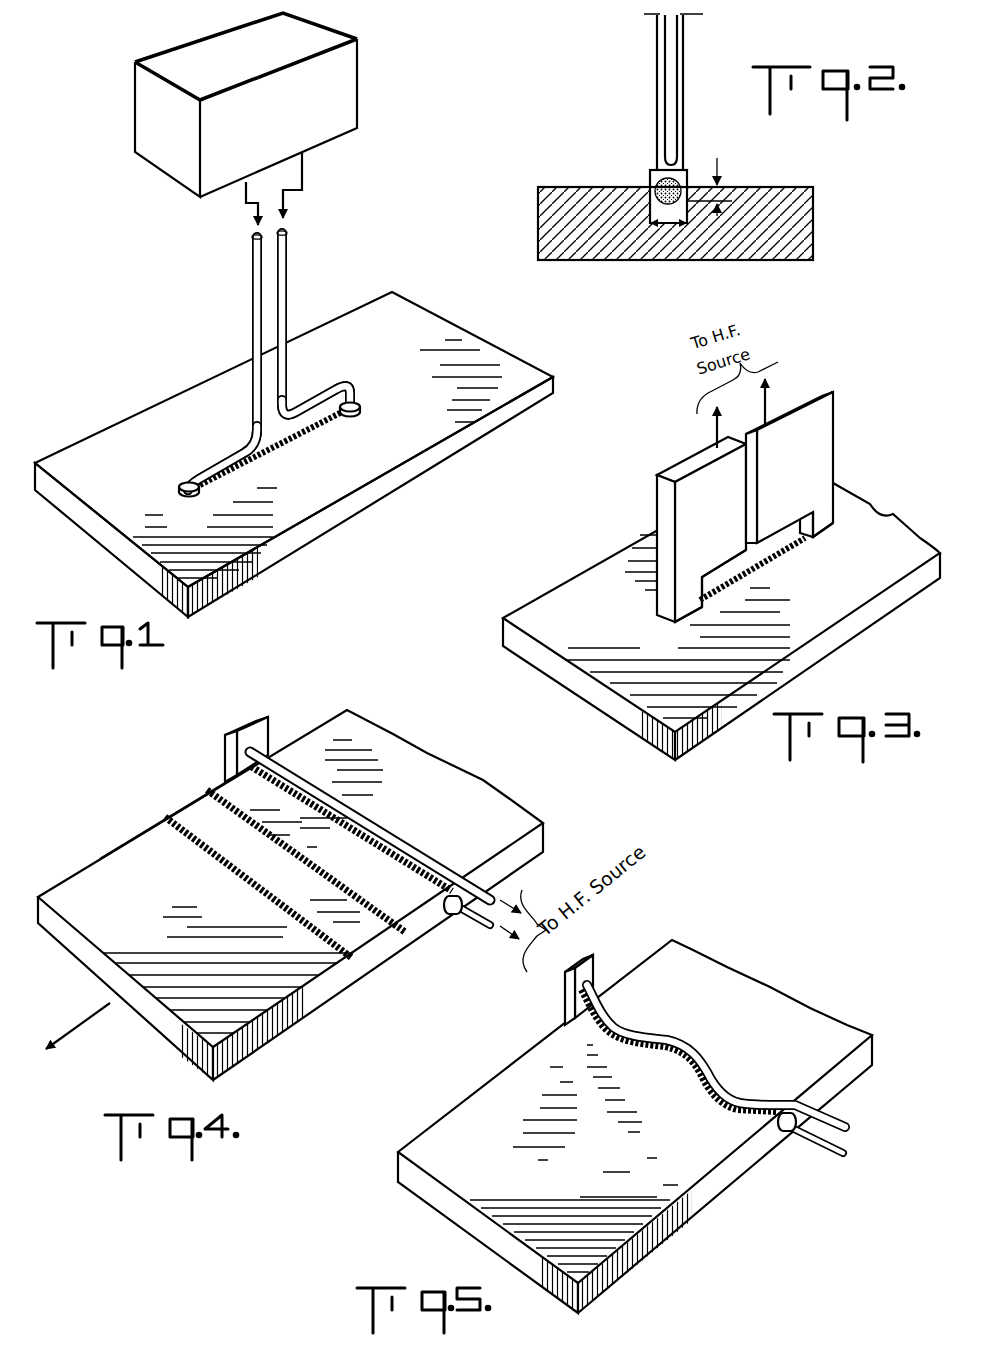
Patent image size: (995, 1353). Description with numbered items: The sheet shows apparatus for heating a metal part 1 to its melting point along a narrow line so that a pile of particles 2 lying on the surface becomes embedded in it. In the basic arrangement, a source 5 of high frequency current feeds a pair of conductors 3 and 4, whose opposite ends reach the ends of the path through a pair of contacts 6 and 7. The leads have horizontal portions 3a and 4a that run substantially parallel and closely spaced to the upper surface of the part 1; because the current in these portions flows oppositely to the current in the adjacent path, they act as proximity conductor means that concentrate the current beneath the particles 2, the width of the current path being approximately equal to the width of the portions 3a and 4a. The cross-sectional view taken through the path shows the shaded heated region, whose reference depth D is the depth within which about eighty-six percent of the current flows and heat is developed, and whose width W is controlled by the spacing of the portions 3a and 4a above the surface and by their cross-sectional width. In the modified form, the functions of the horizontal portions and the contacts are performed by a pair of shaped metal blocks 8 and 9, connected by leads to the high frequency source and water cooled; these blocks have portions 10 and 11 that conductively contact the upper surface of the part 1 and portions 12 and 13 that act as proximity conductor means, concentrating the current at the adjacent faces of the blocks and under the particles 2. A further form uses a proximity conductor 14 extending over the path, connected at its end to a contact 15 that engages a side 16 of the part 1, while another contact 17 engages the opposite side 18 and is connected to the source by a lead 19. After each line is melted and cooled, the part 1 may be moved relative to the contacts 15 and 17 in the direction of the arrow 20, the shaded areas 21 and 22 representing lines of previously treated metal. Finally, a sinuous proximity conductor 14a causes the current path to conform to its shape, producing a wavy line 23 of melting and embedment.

In FIG. 1, the metal part 1 is at (392, 291).
In FIG. 2, the metal part 1 is at (538, 196).
In FIG. 3, the metal part 1 is at (882, 518).
In FIG. 1, the particles 2 is at (295, 437).
In FIG. 2, the particles 2 is at (654, 178).
In FIG. 3, the particles 2 is at (758, 565).
In FIG. 4, the particles 2 is at (378, 848).
In FIG. 1, the conductor 3 is at (251, 266).
In FIG. 3, the conductor 3 is at (712, 424).
In FIG. 1, the horizontal portion of conductor 3 3a is at (217, 451).
In FIG. 1, the conductor 4 is at (290, 266).
In FIG. 2, the conductor 4 is at (684, 62).
In FIG. 3, the conductor 4 is at (771, 393).
In FIG. 1, the horizontal portion of conductor 4 4a is at (342, 387).
In FIG. 1, the source of high frequency current 5 is at (182, 175).
In FIG. 1, the contact 6 is at (361, 410).
In FIG. 2, the contact 6 is at (683, 172).
In FIG. 1, the contact 7 is at (193, 497).
In FIG. 3, the shaped metal block 8 is at (836, 415).
In FIG. 3, the shaped metal block 9 is at (660, 503).
In FIG. 3, the contact portion of block 8 10 is at (836, 525).
In FIG. 3, the contact portion of block 9 11 is at (683, 612).
In FIG. 3, the proximity conductor portion of block 8 12 is at (786, 532).
In FIG. 3, the proximity conductor portion of block 9 13 is at (718, 572).
In FIG. 4, the proximity conductor 14 is at (363, 816).
In FIG. 5, the sinuous proximity conductor 14a is at (713, 1054).
In FIG. 4, the contact 15 is at (262, 716).
In FIG. 5, the contact 15 is at (595, 962).
In FIG. 4, the side of the part 16 is at (127, 850).
In FIG. 4, the contact 17 is at (452, 919).
In FIG. 4, the opposite side of the part 18 is at (322, 1001).
In FIG. 5, the opposite side of the part 18 is at (748, 1163).
In FIG. 4, the lead 19 is at (475, 928).
In FIG. 4, the arrow 20 is at (77, 1020).
In FIG. 4, the shaded area 21 is at (277, 905).
In FIG. 4, the shaded area 22 is at (333, 883).
In FIG. 5, the wavy line 23 is at (637, 1058).
In FIG. 2, the reference depth D is at (731, 188).
In FIG. 2, the width of the current path W is at (662, 228).